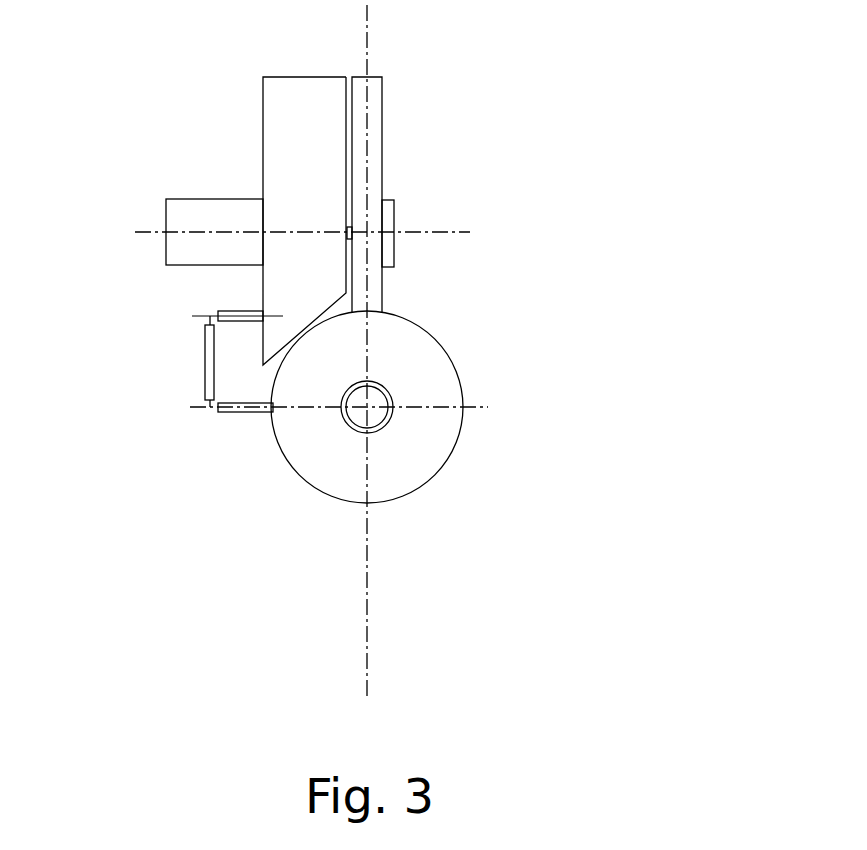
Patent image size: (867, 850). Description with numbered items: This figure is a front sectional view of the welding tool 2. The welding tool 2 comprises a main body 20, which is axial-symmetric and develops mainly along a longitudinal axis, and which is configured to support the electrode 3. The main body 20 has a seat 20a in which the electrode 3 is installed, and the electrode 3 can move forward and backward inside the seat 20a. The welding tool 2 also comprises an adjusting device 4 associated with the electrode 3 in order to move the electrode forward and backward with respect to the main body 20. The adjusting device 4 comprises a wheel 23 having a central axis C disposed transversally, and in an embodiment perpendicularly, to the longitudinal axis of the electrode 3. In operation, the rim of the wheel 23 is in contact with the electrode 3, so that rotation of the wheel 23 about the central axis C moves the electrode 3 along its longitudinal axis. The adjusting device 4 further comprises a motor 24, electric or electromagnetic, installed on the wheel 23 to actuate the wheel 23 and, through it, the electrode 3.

The welding tool 2 is at (476, 524).
The electrode 3 is at (373, 402).
The adjusting device 4 is at (394, 148).
The main body 20 is at (458, 445).
The seat 20a is at (343, 424).
The wheel 23 is at (382, 88).
The motor 24 is at (185, 248).
The central axis C is at (435, 232).